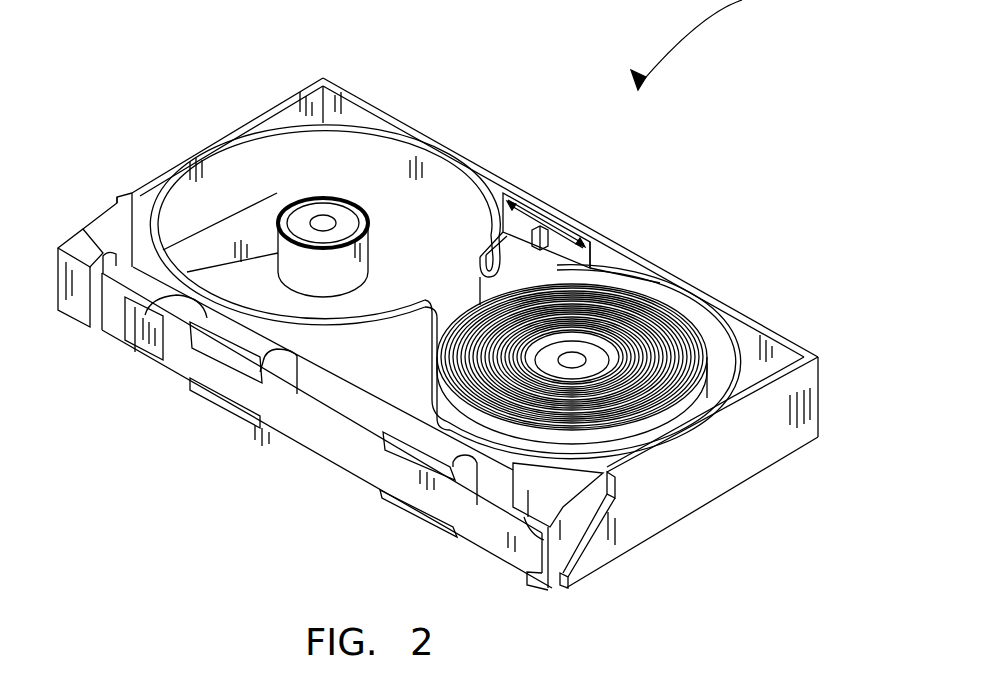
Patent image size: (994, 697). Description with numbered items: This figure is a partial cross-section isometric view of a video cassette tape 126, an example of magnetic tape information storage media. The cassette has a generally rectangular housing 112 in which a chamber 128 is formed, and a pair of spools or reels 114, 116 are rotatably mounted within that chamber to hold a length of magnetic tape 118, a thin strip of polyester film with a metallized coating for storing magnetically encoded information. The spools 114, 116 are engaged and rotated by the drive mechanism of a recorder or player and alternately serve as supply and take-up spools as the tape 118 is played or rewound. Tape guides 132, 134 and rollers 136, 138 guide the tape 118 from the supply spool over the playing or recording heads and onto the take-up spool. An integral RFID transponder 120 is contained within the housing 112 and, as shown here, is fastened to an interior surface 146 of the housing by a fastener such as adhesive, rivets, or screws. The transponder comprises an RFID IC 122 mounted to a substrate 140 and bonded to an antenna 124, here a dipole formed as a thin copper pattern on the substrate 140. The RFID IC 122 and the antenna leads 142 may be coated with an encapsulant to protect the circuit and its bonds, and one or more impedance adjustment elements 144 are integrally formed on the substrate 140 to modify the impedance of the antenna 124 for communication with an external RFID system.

The housing 112 is at (820, 355).
The reel 114 is at (343, 217).
The reel 116 is at (593, 360).
The magnetic tape 118 is at (703, 327).
The RFID transponder 120 is at (536, 228).
The RFID IC 122 is at (604, 204).
The antenna 124 is at (617, 258).
The video cassette tape 126 is at (132, 190).
The chamber 128 is at (432, 168).
The tape guide 132 is at (215, 398).
The tape guide 134 is at (400, 507).
The roller 136 is at (128, 305).
The roller 138 is at (553, 588).
The substrate 140 is at (503, 200).
The antenna leads 142 is at (480, 250).
The impedance adjustment element 144 is at (517, 207).
The interior surface 146 is at (648, 297).